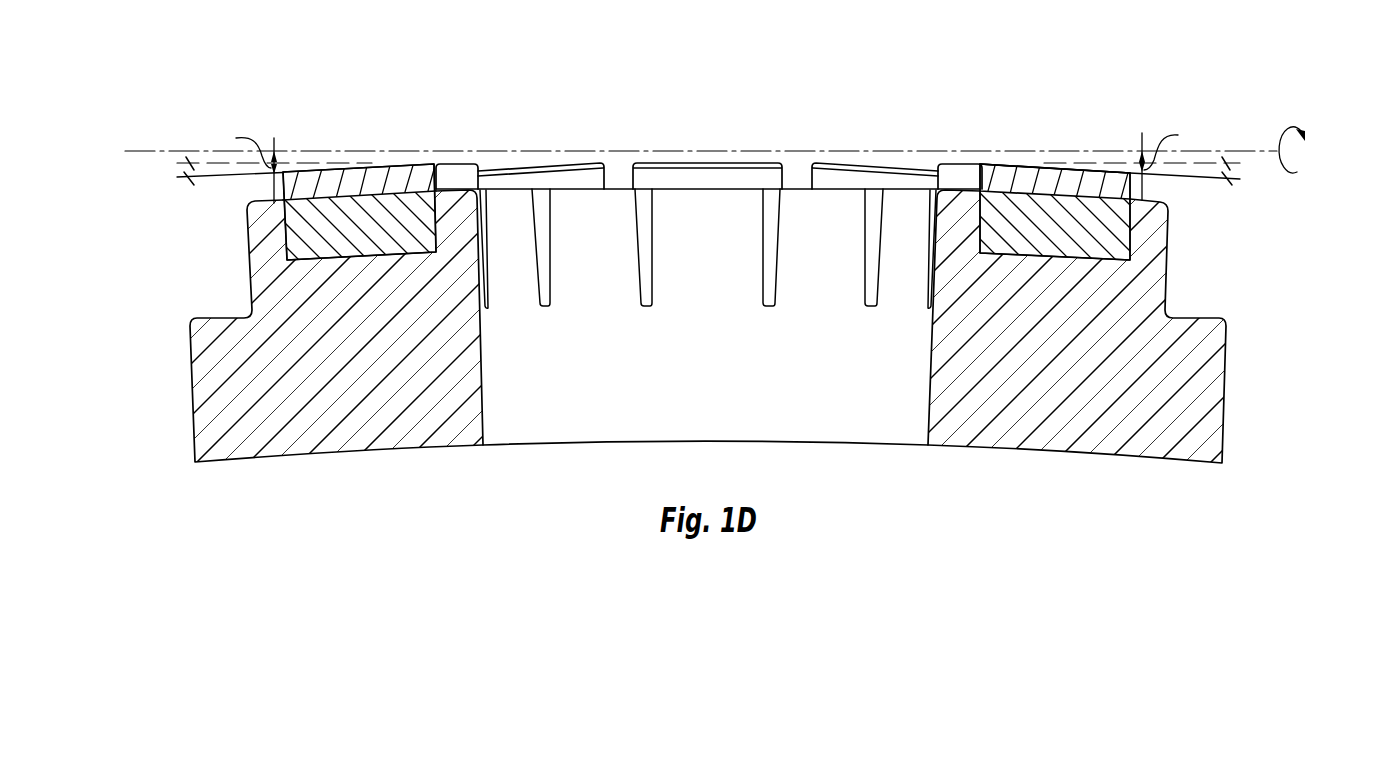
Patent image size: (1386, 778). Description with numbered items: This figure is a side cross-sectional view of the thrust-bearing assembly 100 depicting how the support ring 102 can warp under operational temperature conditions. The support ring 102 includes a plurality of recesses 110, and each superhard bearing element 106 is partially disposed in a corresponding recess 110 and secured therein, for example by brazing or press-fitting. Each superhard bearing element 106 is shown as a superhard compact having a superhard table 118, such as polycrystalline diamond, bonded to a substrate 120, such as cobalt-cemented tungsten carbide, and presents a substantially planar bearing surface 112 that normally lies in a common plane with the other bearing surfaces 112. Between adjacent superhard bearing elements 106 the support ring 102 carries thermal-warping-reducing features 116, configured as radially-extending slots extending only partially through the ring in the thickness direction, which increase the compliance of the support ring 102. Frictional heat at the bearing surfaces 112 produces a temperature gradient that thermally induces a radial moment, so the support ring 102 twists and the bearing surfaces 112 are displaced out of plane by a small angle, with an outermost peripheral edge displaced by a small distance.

The thrust-bearing assembly 100 is at (693, 261).
The support ring 102 is at (1212, 413).
The superhard bearing element 106 is at (856, 324).
The recess 110 is at (1046, 195).
The bearing surface 112 is at (1040, 164).
The thermal-warping-reducing feature 116 is at (648, 304).
The superhard table 118 is at (1110, 186).
The substrate 120 is at (1108, 245).